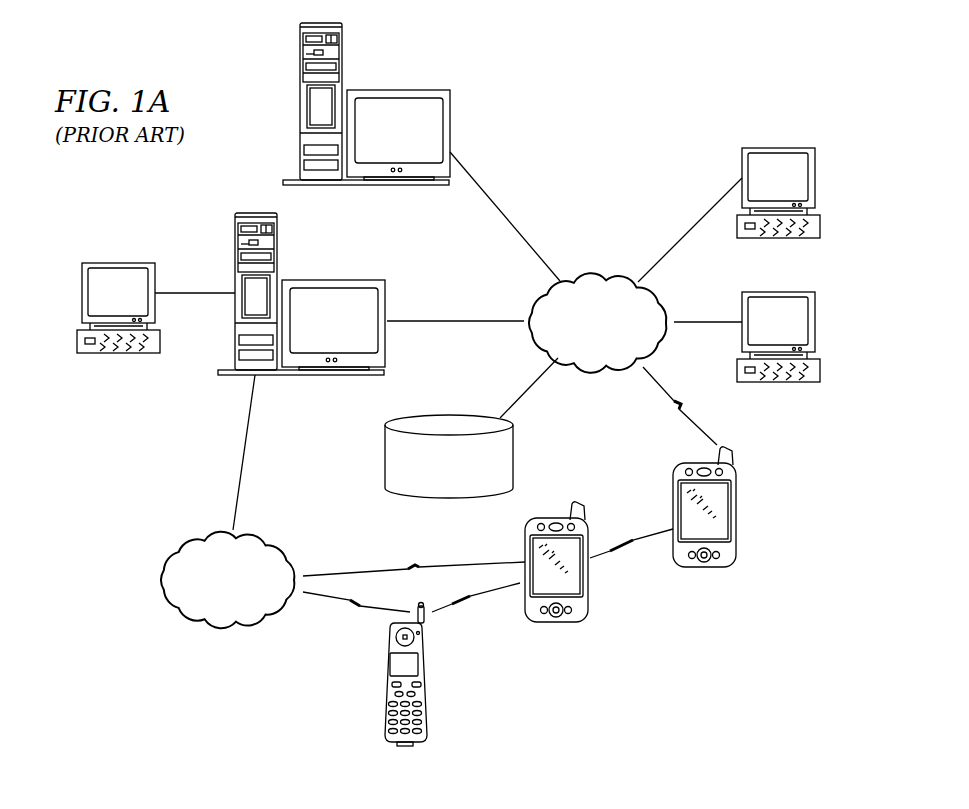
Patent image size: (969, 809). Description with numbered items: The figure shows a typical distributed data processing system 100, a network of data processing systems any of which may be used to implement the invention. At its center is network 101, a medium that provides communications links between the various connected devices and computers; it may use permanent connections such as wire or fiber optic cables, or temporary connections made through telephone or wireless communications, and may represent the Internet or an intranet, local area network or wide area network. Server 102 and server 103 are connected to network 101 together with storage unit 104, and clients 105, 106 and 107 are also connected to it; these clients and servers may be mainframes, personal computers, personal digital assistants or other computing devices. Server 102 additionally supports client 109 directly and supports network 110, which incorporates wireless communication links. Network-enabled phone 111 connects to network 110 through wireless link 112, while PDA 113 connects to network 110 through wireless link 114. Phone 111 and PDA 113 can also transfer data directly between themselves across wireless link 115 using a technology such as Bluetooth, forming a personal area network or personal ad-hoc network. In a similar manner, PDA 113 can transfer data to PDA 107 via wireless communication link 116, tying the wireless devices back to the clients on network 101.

The distributed data processing system 100 is at (640, 114).
The network 101 is at (598, 272).
The server 102 is at (235, 242).
The server 103 is at (300, 105).
The storage unit 104 is at (385, 458).
The client 105 is at (815, 180).
The client 106 is at (815, 322).
The PDA 107 is at (737, 521).
The client 109 is at (82, 293).
The network 110 is at (198, 532).
The network-enabled phone 111 is at (428, 693).
The wireless link 112 is at (325, 600).
The PDA 113 is at (590, 583).
The wireless link 114 is at (358, 572).
The wireless link 115 is at (450, 603).
The wireless communication link 116 is at (648, 537).